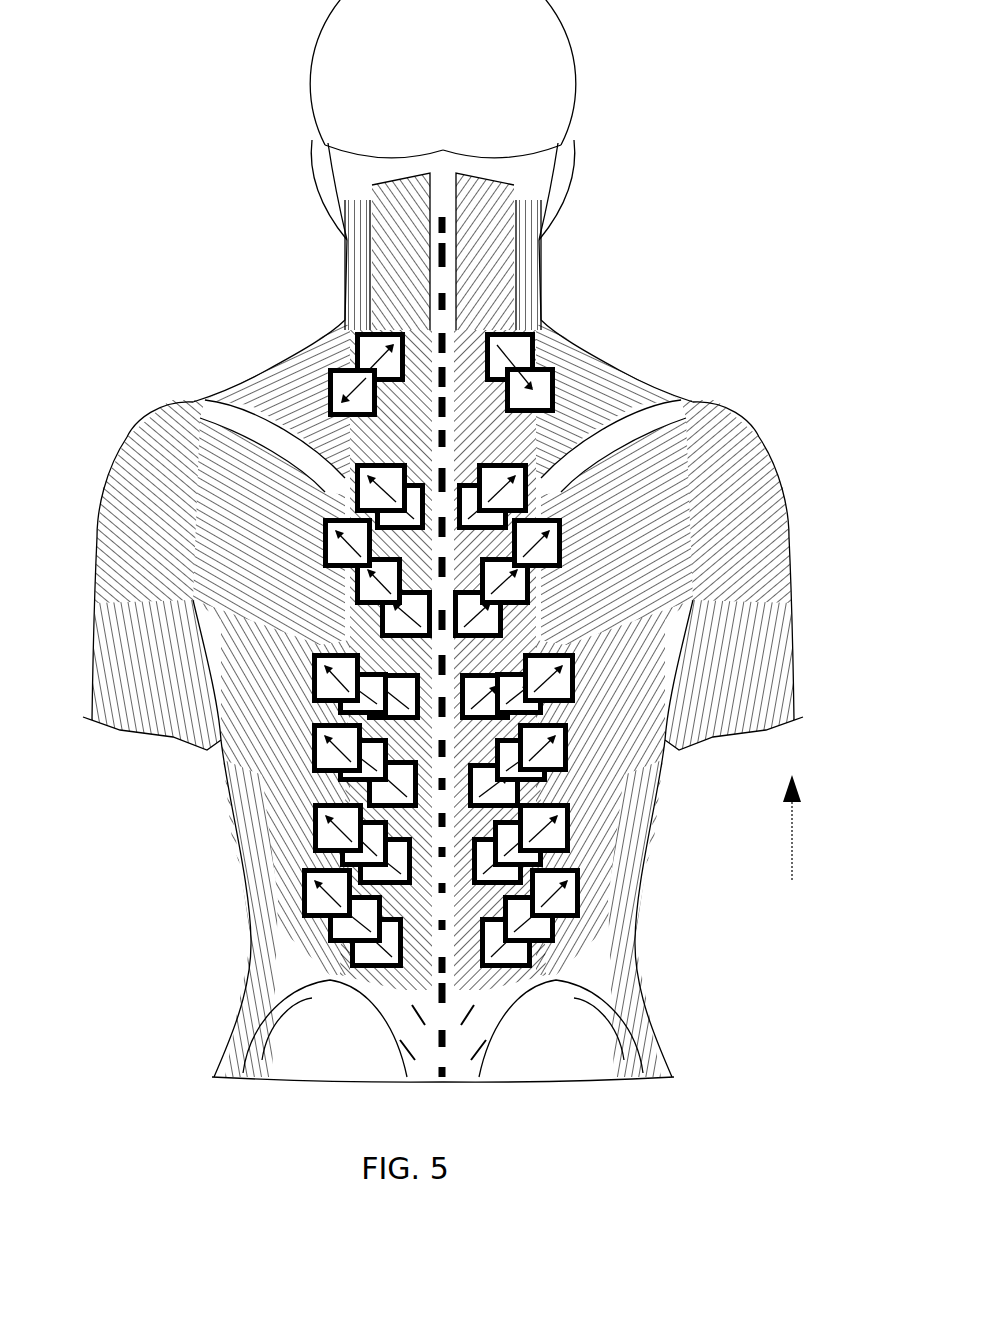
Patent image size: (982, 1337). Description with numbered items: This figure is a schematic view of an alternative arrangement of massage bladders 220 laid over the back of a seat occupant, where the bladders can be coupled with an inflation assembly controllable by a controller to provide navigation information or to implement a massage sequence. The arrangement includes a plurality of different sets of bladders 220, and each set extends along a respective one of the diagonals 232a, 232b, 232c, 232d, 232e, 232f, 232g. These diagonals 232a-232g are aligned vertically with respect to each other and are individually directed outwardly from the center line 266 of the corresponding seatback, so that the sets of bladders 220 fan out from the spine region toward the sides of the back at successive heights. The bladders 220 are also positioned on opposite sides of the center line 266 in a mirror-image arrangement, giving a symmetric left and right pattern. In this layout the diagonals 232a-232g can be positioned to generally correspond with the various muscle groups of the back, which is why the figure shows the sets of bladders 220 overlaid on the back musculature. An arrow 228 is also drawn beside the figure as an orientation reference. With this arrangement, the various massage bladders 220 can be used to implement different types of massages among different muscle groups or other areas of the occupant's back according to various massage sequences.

The massage bladders 220 is at (322, 342).
The diagonal 232a is at (269, 971).
The diagonal 232b is at (236, 878).
The diagonal 232c is at (232, 806).
The diagonal 232d is at (183, 762).
The diagonal 232e is at (143, 610).
The diagonal 232f is at (170, 480).
The diagonal 232g is at (352, 338).
The direction arrow 228 is at (795, 838).
The center line 266 is at (407, 1020).